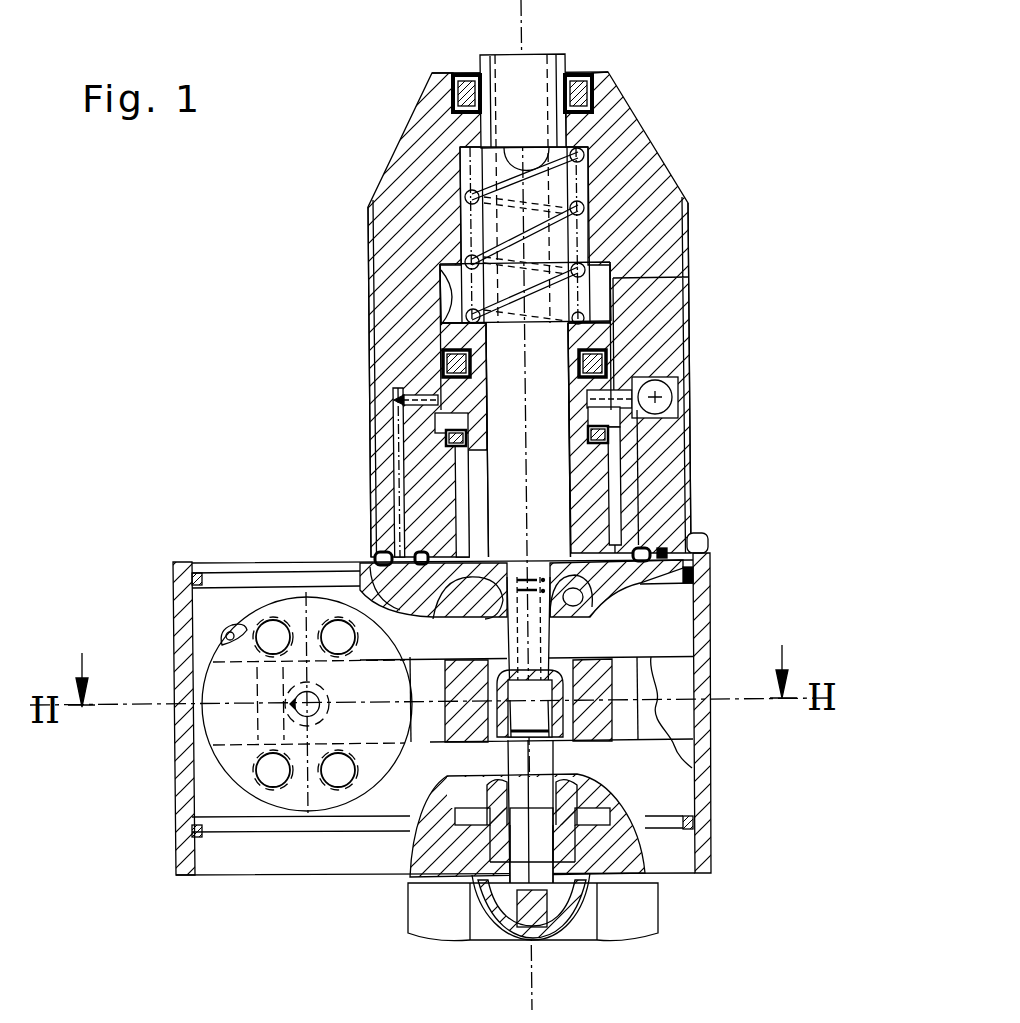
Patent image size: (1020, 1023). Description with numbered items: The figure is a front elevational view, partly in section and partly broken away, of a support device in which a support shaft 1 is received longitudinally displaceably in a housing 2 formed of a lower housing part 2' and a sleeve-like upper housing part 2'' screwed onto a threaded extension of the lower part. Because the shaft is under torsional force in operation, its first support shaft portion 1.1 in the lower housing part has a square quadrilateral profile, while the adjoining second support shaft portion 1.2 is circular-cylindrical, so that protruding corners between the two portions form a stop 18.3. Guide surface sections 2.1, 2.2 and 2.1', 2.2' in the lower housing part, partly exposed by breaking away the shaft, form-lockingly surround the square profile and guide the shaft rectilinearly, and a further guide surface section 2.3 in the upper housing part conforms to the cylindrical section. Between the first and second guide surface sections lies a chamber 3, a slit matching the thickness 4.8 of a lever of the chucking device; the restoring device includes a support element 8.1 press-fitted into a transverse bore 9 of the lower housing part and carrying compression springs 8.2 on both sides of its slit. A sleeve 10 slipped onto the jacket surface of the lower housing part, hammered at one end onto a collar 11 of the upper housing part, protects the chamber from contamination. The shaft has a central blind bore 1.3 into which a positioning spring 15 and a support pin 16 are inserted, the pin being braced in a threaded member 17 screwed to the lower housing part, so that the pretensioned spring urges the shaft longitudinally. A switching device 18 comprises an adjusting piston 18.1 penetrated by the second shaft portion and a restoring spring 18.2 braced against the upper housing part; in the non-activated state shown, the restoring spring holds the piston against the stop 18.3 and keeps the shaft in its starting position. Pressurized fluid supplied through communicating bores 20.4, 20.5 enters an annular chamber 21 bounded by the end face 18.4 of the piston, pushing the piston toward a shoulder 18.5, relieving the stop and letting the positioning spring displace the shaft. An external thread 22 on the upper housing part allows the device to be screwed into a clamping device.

The support shaft 1 is at (490, 53).
The first support shaft portion 1.1 is at (840, 560).
The second support shaft portion 1.2 is at (838, 53).
The central blind bore 1.3 is at (523, 945).
The housing 2 is at (364, 440).
The lower housing part 2' is at (383, 594).
The upper housing part 2'' is at (392, 440).
The first guide surface section 2.1 is at (605, 789).
The first guide surface section 2.2 is at (461, 789).
The second guide surface section 2.1' is at (602, 609).
The second guide surface section 2.2' is at (436, 610).
The further guide surface section 2.3 is at (553, 53).
The chamber 3 is at (678, 678).
The thickness of the lever 4.8 is at (707, 770).
The support element 8.1 is at (227, 685).
The compression springs 8.2 is at (260, 772).
The transverse bore 9 is at (222, 640).
The sleeve 10 is at (185, 748).
The collar 11 is at (698, 535).
The positioning spring 15 is at (437, 683).
The support pin 16 is at (540, 945).
The threaded member 17 is at (645, 915).
The switching device 18 is at (262, 208).
The adjusting piston 18.1 is at (440, 268).
The restoring spring 18.2 is at (461, 232).
The stop 18.3 is at (438, 338).
The end face of the adjusting piston 18.4 is at (437, 368).
The shoulder 18.5 is at (688, 273).
The communicating bore 20.4 is at (390, 432).
The communicating bore 20.5 is at (392, 390).
The annular chamber 21 is at (568, 407).
The external thread 22 is at (372, 203).